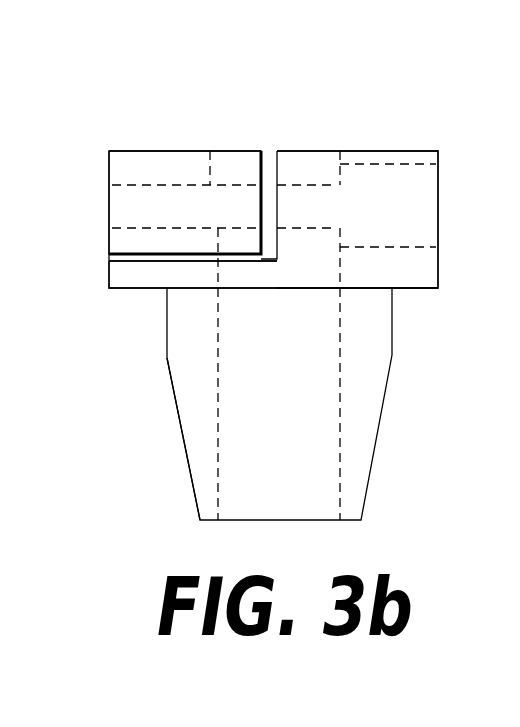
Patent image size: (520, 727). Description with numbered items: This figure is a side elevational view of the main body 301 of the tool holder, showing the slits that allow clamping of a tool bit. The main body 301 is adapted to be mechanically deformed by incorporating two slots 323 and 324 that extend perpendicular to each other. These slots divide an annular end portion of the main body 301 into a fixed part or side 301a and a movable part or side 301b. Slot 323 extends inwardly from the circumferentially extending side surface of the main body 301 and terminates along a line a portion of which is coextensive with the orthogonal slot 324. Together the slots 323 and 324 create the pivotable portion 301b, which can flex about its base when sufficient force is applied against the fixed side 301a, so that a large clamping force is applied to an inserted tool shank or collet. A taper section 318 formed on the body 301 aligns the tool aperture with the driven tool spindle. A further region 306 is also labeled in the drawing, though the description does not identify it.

The main body 301 is at (370, 348).
The fixed part 301a is at (347, 147).
The movable part 301b is at (183, 152).
The insert block 306 is at (137, 185).
The taper section 318 is at (182, 444).
The slot 323 is at (168, 262).
The slot 324 is at (268, 156).